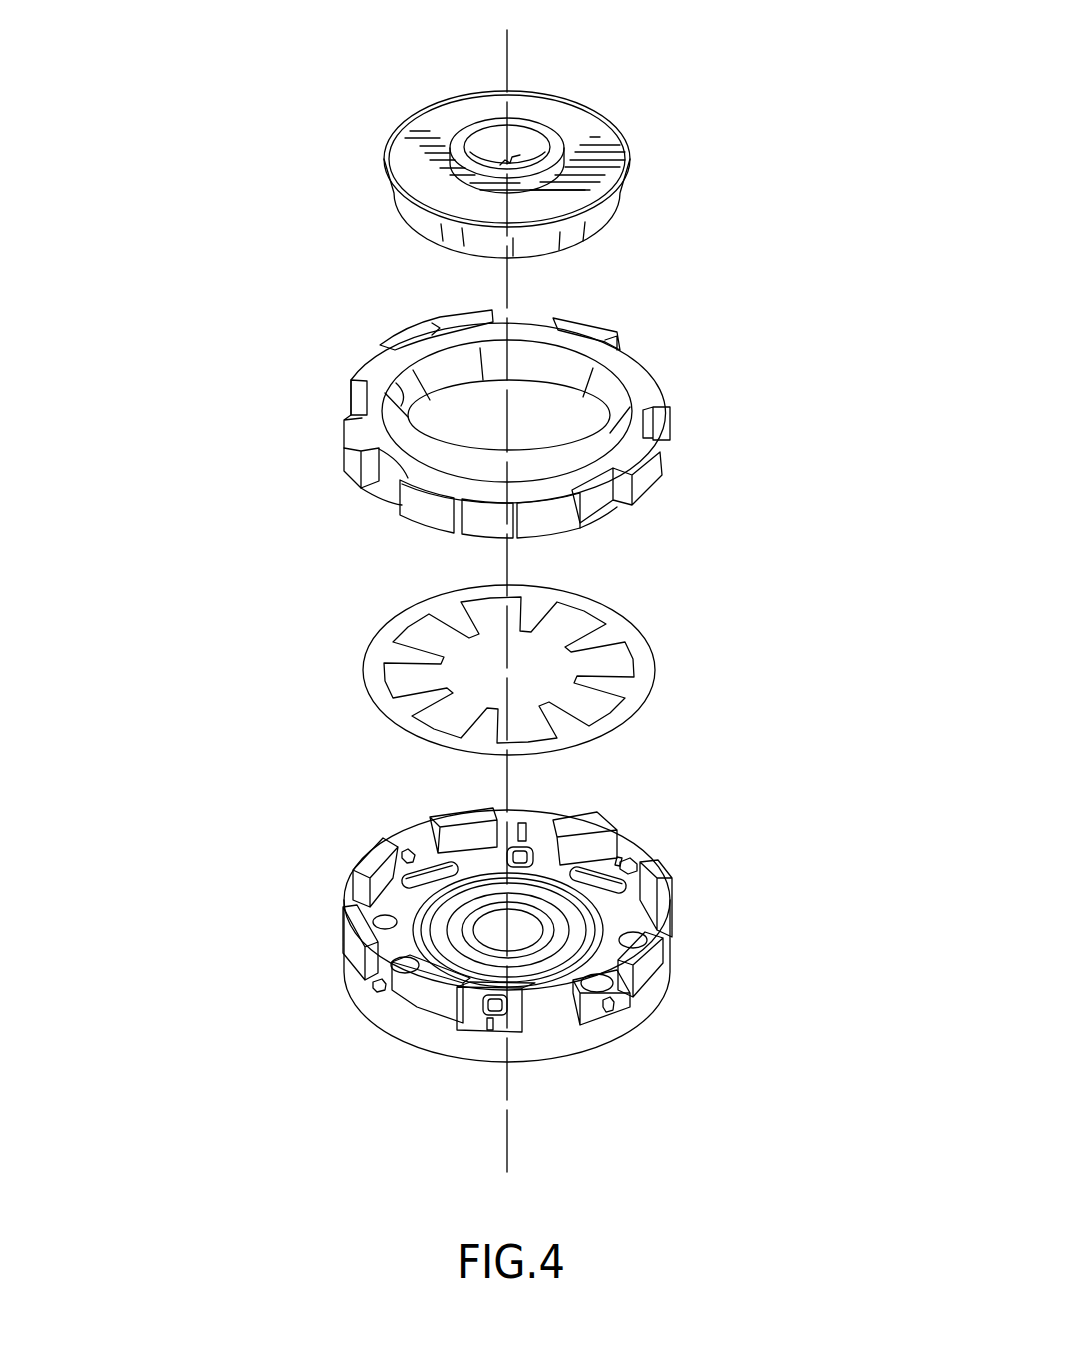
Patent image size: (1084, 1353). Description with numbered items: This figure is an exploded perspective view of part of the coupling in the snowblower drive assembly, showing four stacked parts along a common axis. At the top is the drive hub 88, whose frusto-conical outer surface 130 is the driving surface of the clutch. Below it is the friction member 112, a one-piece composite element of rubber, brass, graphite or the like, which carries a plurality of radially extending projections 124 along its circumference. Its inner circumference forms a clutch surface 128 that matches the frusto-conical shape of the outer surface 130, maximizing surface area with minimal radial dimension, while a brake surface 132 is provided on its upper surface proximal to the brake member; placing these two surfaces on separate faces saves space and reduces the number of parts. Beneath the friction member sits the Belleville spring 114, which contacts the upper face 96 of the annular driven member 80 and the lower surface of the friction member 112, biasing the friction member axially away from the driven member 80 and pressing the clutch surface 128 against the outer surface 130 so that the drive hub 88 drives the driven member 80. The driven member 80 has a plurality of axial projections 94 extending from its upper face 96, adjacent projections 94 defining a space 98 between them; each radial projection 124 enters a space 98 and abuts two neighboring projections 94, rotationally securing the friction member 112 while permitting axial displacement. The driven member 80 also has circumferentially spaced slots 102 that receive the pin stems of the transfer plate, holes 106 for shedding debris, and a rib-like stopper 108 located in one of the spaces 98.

The driven member 80 is at (531, 940).
The drive hub 88 is at (562, 161).
The projection 94 is at (346, 920).
The upper face 96 is at (392, 897).
The space 98 is at (407, 848).
The slot 102 is at (525, 838).
The hole 106 is at (626, 862).
The stopper 108 is at (375, 985).
The friction member 112 is at (526, 422).
The Belleville spring 114 is at (368, 668).
The radial projection 124 is at (440, 317).
The clutch surface 128 is at (396, 383).
The outer surface 130 is at (588, 233).
The brake surface 132 is at (380, 433).